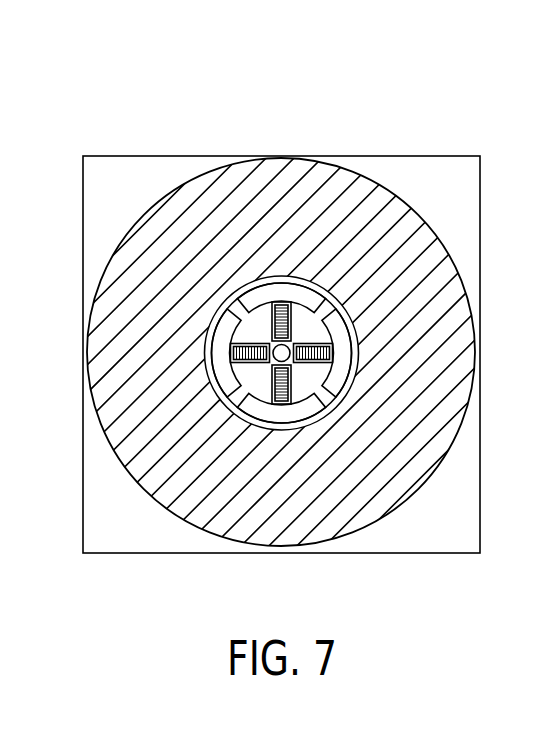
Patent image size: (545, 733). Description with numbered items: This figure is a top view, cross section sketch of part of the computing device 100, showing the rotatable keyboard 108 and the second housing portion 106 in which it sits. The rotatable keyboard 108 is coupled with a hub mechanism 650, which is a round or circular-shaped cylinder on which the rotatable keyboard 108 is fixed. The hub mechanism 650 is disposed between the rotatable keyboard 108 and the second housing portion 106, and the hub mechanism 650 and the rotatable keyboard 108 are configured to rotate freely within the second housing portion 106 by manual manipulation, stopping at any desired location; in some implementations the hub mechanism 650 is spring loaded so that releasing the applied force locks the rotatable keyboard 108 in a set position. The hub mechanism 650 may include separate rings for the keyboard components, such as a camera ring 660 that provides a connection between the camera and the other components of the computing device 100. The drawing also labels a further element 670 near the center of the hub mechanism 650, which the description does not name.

The computing device 100 is at (168, 80).
The second housing portion 106 is at (118, 517).
The rotatable keyboard 108 is at (176, 415).
The hub mechanism 650 is at (228, 352).
The camera ring 660 is at (262, 297).
The central hub 670 is at (290, 342).